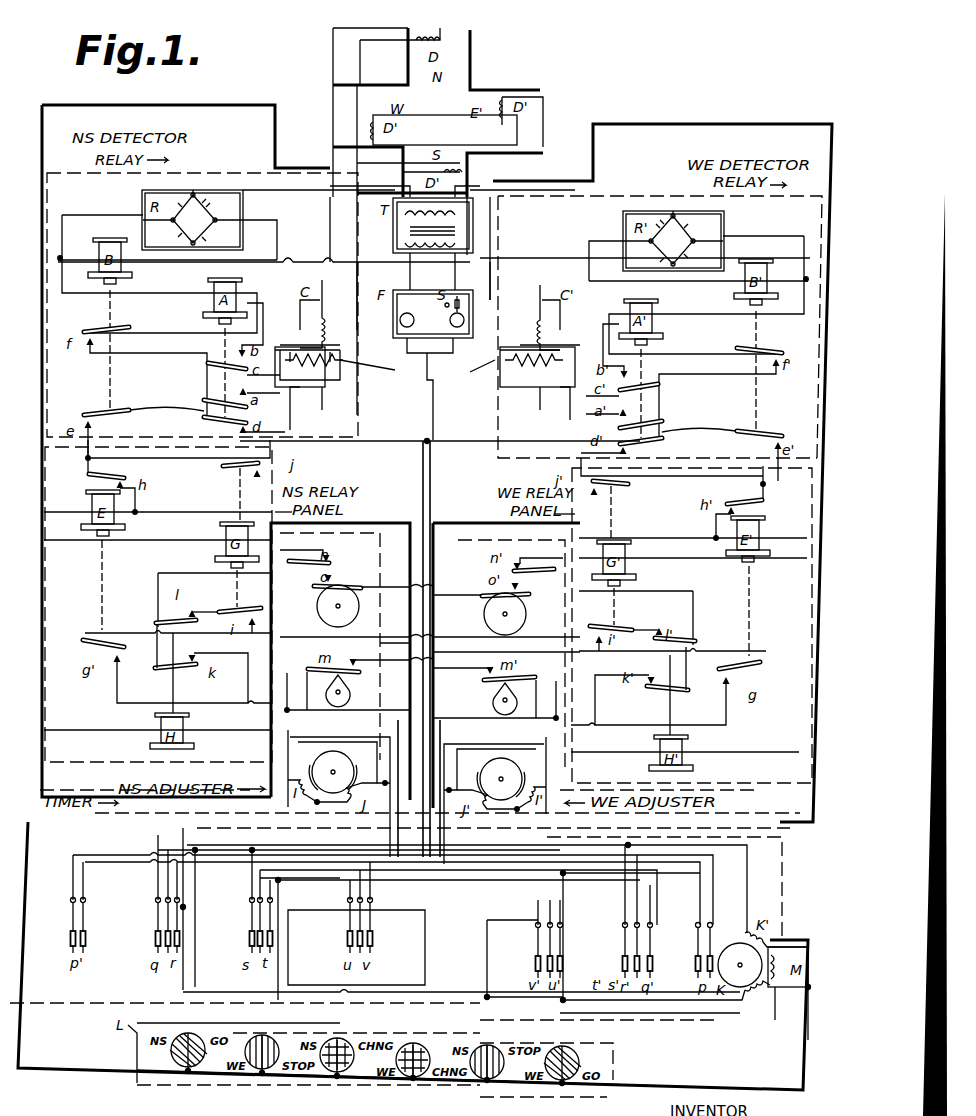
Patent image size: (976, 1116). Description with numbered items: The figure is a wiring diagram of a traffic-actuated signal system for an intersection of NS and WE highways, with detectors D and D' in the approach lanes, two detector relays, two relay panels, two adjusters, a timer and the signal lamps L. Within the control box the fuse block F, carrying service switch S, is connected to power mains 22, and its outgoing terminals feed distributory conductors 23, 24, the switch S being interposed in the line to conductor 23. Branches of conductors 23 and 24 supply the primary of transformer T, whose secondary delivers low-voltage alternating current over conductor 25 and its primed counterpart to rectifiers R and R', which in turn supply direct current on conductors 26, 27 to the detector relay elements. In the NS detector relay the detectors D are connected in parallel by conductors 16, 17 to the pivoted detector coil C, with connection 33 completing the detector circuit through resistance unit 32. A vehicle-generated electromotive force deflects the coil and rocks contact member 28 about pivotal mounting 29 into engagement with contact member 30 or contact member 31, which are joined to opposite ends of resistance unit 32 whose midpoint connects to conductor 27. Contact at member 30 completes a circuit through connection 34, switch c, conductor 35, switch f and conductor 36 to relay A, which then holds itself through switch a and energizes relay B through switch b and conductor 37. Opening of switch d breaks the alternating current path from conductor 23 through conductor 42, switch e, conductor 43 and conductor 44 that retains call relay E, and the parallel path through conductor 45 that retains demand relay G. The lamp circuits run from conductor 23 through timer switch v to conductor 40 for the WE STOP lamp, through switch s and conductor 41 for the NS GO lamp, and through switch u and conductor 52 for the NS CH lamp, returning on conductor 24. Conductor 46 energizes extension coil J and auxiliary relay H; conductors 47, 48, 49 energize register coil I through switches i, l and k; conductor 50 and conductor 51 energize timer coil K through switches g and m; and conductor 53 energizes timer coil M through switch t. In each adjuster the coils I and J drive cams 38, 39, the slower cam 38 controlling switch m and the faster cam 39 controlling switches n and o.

The conductor 16 is at (333, 104).
The conductor 17 is at (360, 130).
The power mains 22 is at (430, 357).
The distributory conductor 23 is at (292, 436).
The distributory conductor 24 is at (66, 104).
The conductor 25 is at (320, 256).
The conductor 26 is at (116, 213).
The conductor 27 is at (285, 225).
The contact member 28 is at (340, 345).
The pivotal mounting 29 is at (426, 329).
The contact member 30 is at (425, 371).
The contact member 31 is at (345, 365).
The resistance unit 32 is at (322, 385).
The conductor 33 is at (434, 326).
The conductor 34 is at (435, 310).
The conductor 35 is at (190, 364).
The conductor 36 is at (695, 350).
The conductor 37 is at (170, 260).
The cam 38 is at (323, 690).
The cam 39 is at (316, 608).
The conductor 40 is at (355, 888).
The conductor 41 is at (115, 690).
The conductor 42 is at (175, 420).
The conductor 43 is at (168, 466).
The conductor 44 is at (410, 523).
The conductor 45 is at (270, 562).
The conductor 46 is at (665, 858).
The conductor 47 is at (220, 615).
The conductor 48 is at (185, 570).
The conductor 49 is at (240, 694).
The conductor 50 is at (765, 655).
The conductor 51 is at (727, 1033).
The conductor 52 is at (317, 910).
The conductor 53 is at (275, 900).